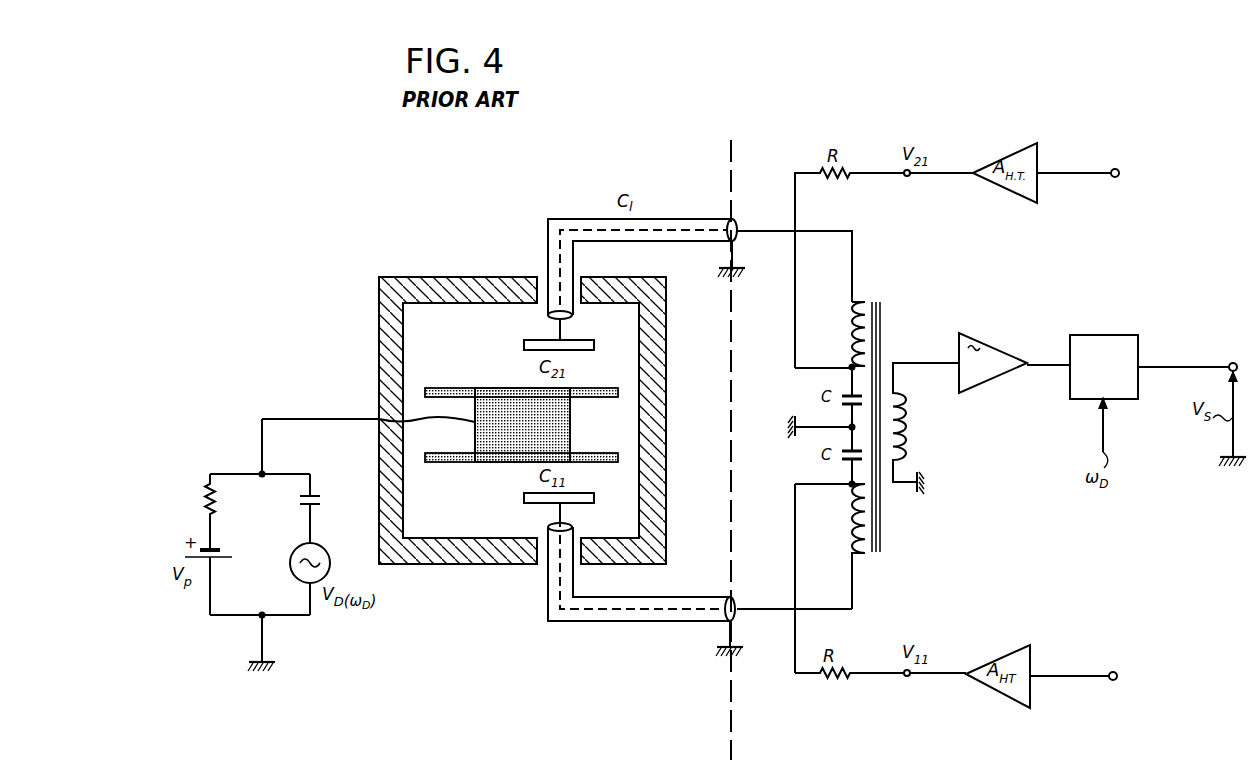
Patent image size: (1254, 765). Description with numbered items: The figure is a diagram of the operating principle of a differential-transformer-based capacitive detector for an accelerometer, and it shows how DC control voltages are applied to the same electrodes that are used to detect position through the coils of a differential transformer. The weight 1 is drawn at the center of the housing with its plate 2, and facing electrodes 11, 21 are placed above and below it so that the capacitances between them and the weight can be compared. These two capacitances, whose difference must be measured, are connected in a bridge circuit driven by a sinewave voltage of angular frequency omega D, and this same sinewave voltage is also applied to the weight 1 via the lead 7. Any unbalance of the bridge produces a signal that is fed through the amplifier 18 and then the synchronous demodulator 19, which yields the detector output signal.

The weight 1 is at (505, 456).
The upper electrode plate 2 is at (495, 388).
The lead 7 is at (412, 419).
The fixed electrode 11 is at (594, 499).
The fixed electrode 21 is at (594, 345).
The amplifier 18 is at (990, 343).
The synchronous demodulator 19 is at (1103, 335).